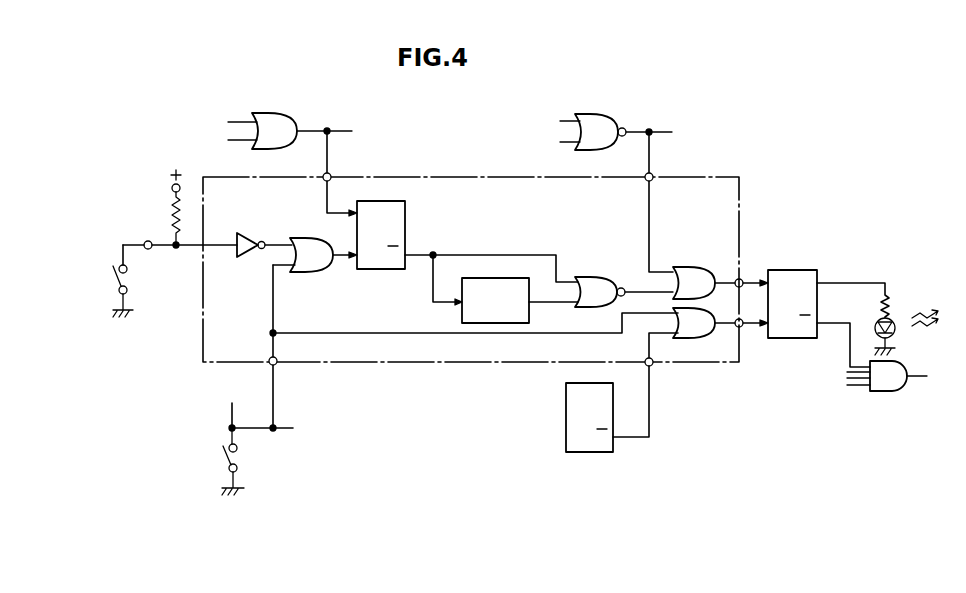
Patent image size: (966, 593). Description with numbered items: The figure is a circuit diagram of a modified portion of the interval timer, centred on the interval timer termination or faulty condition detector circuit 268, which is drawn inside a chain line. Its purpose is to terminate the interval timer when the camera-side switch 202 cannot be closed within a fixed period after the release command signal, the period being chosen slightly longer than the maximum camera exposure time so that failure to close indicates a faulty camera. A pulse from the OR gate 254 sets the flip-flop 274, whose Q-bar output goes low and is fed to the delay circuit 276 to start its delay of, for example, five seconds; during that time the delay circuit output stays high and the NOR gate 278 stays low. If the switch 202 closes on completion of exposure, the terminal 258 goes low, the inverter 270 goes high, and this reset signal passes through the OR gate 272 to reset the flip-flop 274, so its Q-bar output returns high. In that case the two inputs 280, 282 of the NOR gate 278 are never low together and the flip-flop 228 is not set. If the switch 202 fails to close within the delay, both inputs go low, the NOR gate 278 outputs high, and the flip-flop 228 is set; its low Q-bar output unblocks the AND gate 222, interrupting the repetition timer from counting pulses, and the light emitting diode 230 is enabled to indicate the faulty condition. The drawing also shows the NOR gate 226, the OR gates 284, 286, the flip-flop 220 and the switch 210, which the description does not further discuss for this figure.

The switch 202 is at (110, 276).
The switch 210 is at (228, 451).
The flip-flop 220 is at (566, 452).
The AND gate 222 is at (885, 392).
The NOR gate 226 is at (613, 112).
The flip-flop 228 is at (786, 270).
The light emitting diode 230 is at (893, 320).
The OR gate 254 is at (280, 113).
The terminal 258 is at (145, 244).
The interval timer termination or faulty condition detector circuit 268 is at (467, 176).
The inverter 270 is at (240, 233).
The OR gate 272 is at (305, 273).
The flip-flop 274 is at (378, 270).
The delay circuit 276 is at (458, 315).
The NOR gate 278 is at (582, 278).
The input 280 is at (553, 256).
The input 282 is at (561, 302).
The OR gate 284 is at (703, 259).
The OR gate 286 is at (700, 339).